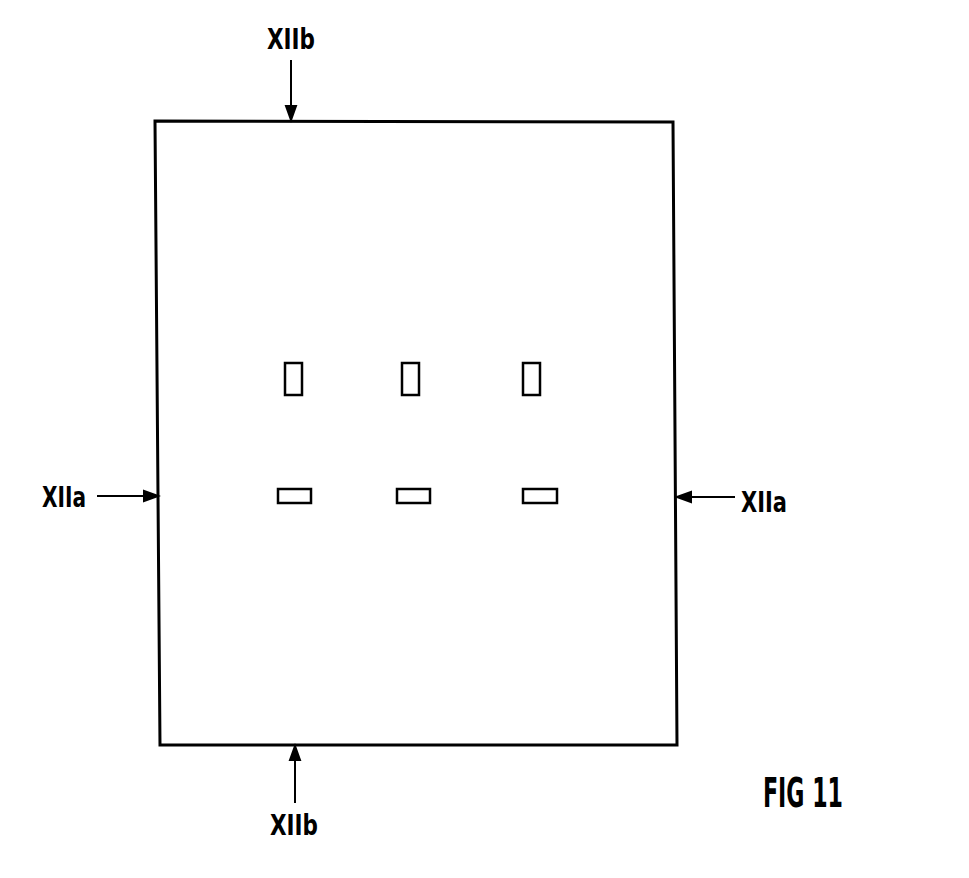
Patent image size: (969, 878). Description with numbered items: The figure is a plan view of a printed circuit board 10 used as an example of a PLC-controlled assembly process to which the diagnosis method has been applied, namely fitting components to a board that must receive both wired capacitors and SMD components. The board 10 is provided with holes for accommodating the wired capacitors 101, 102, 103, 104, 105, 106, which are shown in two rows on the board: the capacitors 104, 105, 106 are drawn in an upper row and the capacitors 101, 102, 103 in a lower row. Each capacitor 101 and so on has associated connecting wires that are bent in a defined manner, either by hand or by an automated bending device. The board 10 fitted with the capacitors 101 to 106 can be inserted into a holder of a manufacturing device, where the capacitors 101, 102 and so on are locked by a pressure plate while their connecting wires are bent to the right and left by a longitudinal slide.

The printed circuit board 10 is at (408, 267).
The capacitor 101 is at (292, 500).
The capacitor 102 is at (410, 500).
The capacitor 103 is at (540, 500).
The capacitor 104 is at (293, 364).
The capacitor 105 is at (406, 364).
The capacitor 106 is at (533, 364).